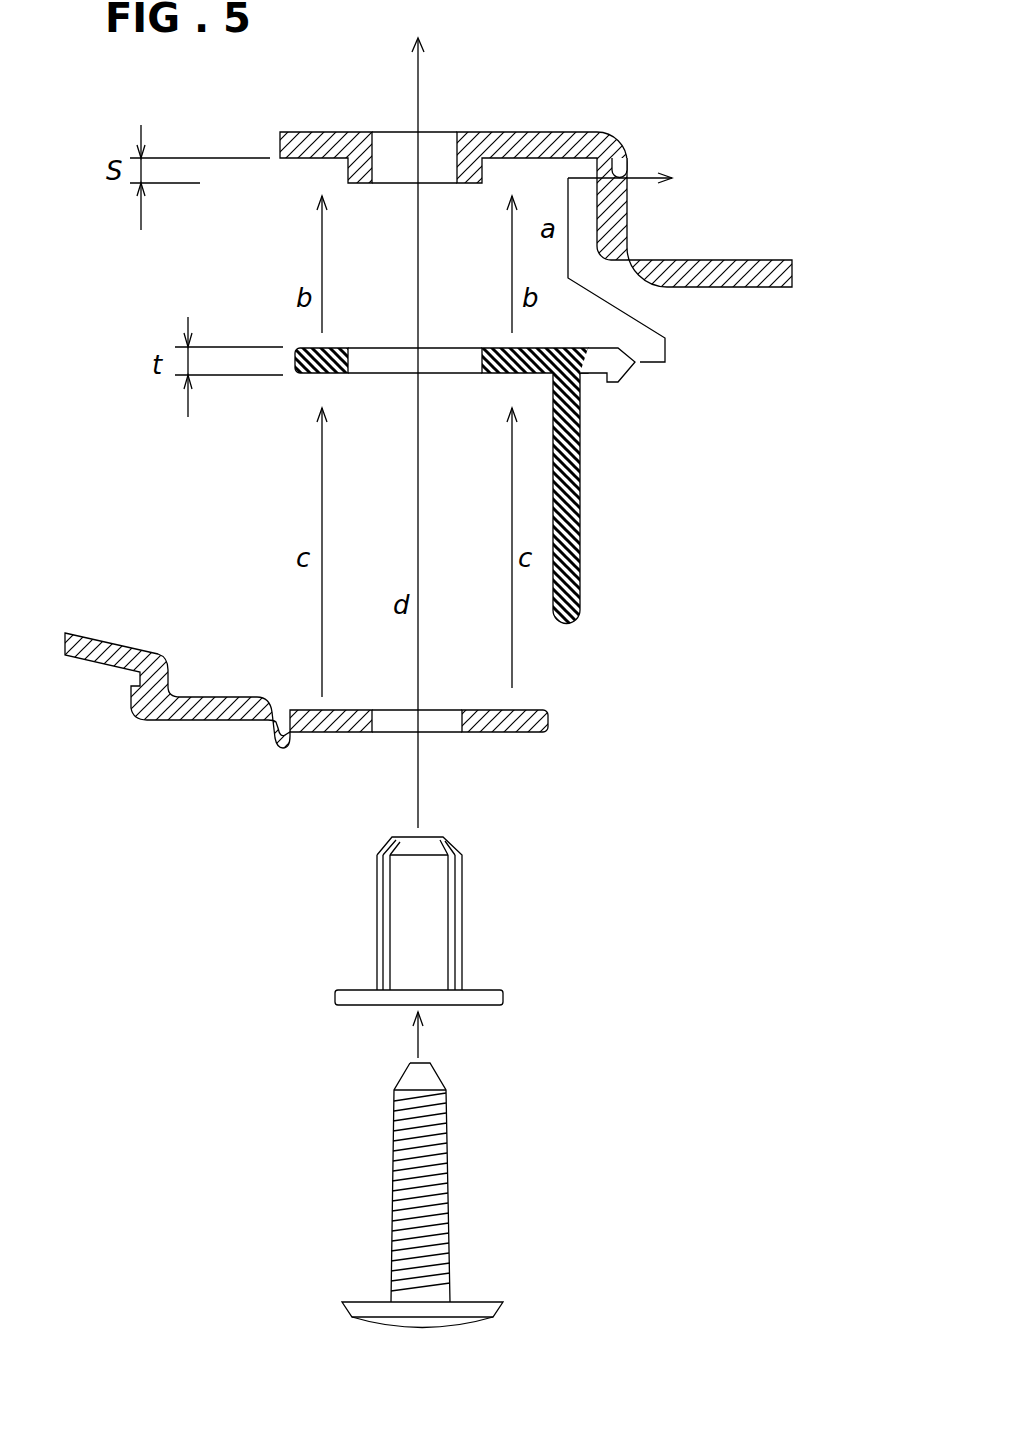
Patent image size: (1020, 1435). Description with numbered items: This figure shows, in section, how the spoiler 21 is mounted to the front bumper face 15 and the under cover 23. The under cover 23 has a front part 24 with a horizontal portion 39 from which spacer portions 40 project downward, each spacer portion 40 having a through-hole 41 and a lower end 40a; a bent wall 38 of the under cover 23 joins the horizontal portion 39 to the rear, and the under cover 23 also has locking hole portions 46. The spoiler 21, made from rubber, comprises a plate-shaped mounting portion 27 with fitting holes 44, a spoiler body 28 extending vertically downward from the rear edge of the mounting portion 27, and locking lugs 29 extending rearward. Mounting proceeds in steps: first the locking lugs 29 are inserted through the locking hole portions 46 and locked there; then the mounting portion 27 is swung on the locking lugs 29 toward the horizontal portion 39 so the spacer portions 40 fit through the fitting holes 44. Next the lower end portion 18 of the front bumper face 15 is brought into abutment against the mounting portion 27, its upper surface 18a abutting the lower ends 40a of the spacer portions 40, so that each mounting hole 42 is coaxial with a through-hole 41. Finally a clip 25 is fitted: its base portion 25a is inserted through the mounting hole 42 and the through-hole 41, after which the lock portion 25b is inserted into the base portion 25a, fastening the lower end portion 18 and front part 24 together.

The front bumper face 15 is at (148, 723).
The lower end portion 18 is at (348, 734).
The upper surface 18a is at (364, 709).
The spoiler 21 is at (488, 460).
The under cover 23 is at (768, 250).
The front part 24 is at (592, 126).
The clip 25 is at (538, 1082).
The base portion 25a is at (463, 935).
The lock portion 25b is at (504, 1195).
The mounting portion 27 is at (318, 378).
The spoiler body 28 is at (582, 478).
The locking lug 29 is at (622, 367).
The horizontal wall portion 38 is at (621, 224).
The horizontal portion 39 is at (508, 137).
The spacer portion 40 is at (346, 172).
The lower end 40a is at (358, 186).
The through-hole 41 is at (378, 162).
The mounting hole 42 is at (458, 722).
The fitting hole 44 is at (482, 360).
The locking hole portion 46 is at (627, 168).